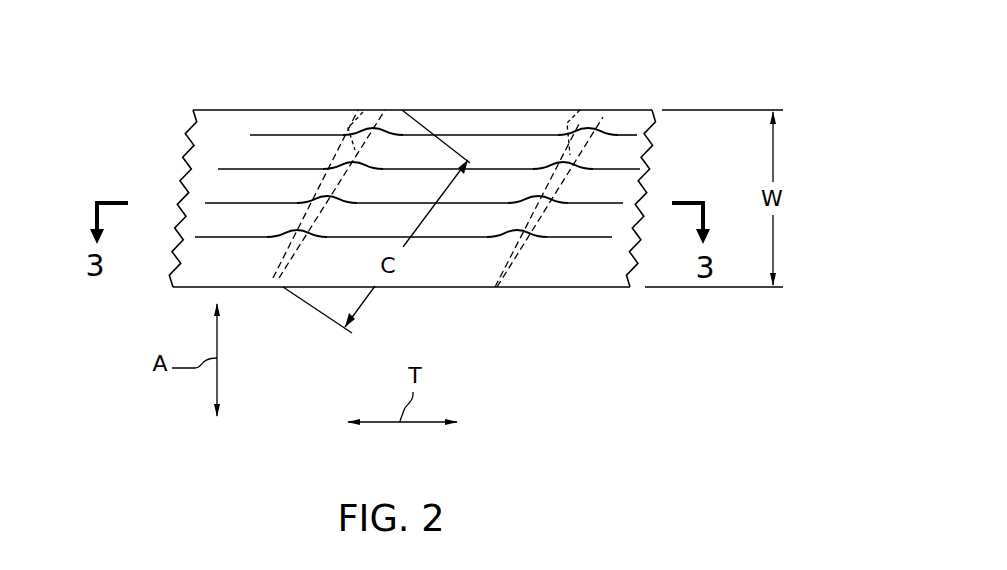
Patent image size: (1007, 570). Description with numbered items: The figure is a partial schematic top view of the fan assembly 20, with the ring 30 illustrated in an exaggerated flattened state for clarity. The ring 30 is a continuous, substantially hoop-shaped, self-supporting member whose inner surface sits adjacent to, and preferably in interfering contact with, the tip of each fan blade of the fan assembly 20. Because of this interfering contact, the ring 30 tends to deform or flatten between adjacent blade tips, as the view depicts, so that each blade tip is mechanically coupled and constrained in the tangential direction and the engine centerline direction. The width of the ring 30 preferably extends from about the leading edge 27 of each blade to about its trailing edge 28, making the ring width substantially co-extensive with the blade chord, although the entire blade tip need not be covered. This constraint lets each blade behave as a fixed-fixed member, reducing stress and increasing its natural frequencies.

The fan assembly 20 is at (478, 143).
The leading edge 27 is at (402, 110).
The trailing edge 28 is at (495, 288).
The annular ring 30 is at (235, 142).